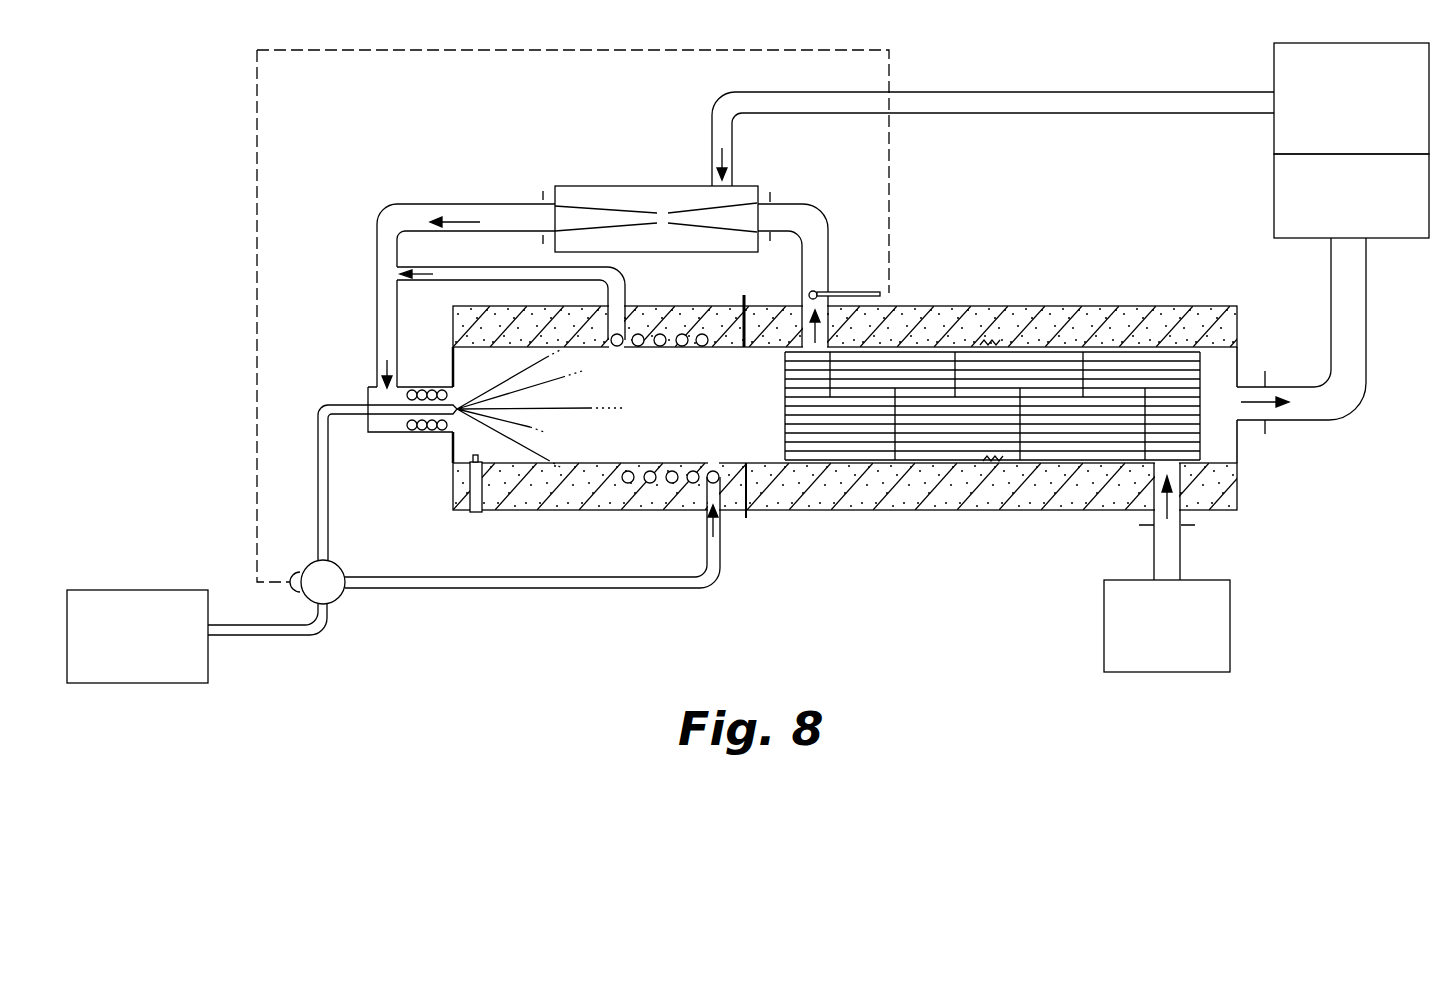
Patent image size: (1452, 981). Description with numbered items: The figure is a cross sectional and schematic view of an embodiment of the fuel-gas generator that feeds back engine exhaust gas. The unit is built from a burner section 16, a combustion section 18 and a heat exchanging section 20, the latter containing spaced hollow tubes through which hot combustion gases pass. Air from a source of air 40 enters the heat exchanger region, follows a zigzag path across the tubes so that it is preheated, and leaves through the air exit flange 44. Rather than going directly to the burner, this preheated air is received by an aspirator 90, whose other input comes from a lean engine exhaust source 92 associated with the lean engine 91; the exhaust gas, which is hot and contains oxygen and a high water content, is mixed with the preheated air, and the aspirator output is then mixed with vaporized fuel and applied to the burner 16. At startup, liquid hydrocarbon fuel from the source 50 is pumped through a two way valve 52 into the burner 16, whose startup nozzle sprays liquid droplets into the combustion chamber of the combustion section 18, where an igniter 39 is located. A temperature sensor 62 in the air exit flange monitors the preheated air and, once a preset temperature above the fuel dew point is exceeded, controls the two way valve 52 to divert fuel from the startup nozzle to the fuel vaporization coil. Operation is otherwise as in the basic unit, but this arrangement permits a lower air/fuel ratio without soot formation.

The burner section 16 is at (418, 387).
The combustion section 18 is at (660, 306).
The heat exchanging section 20 is at (997, 303).
The igniter 39 is at (479, 500).
The source of air 40 is at (1218, 580).
The air exit flange 44 is at (834, 291).
The source of liquid hydrocarbon fuel 50 is at (157, 590).
The two way valve 52 is at (337, 560).
The temperature sensor 62 is at (800, 296).
The aspirator 90 is at (663, 171).
The lean engine 91 is at (1274, 208).
The lean engine exhaust source 92 is at (1378, 43).